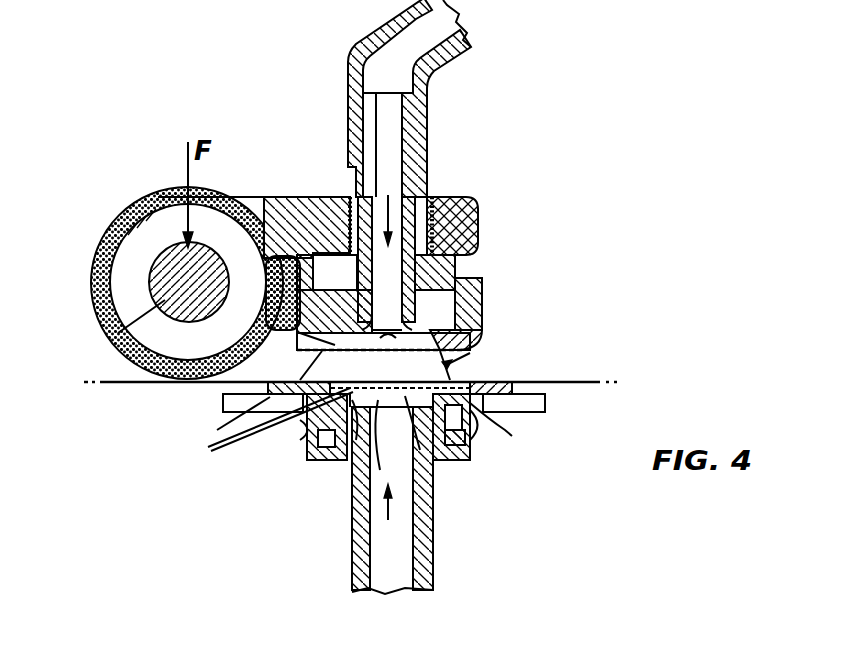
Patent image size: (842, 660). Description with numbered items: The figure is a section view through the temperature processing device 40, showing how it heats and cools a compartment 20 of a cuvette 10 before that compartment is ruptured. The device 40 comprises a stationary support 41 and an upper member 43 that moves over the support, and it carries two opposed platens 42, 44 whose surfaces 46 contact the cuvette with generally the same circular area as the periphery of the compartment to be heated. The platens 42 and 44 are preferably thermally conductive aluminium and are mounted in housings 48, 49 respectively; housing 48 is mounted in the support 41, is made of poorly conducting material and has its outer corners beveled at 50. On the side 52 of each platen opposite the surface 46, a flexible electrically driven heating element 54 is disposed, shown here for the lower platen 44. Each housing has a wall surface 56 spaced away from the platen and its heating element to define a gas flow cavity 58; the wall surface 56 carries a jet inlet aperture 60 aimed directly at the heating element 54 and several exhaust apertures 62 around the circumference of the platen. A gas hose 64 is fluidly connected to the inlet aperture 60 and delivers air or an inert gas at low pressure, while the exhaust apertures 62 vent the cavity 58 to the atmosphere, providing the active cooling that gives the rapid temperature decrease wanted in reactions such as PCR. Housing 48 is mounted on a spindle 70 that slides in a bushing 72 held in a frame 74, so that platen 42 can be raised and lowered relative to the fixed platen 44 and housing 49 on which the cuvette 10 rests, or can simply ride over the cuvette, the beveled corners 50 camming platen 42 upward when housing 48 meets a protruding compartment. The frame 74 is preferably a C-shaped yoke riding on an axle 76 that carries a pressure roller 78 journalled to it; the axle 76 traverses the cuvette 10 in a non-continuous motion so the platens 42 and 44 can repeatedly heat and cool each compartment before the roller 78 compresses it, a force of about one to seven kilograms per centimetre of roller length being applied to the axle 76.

The cuvette 10 is at (553, 386).
The compartment 20 is at (482, 358).
The device 40 is at (593, 240).
The stationary support 41 is at (588, 374).
The platen 42 is at (482, 302).
The upper member 43 is at (495, 190).
The platen 44 is at (310, 445).
The surface 46 is at (326, 348).
The housing 48 is at (482, 288).
The housing 49 is at (216, 431).
The beveled corners 50 is at (500, 350).
The side 52 is at (492, 468).
The heating element 54 is at (438, 465).
The wall surface 56 is at (445, 262).
The gas flow cavity 58 is at (323, 255).
The jet inlet aperture 60 is at (478, 213).
The exhaust aperture 62 is at (267, 316).
The gas hose 64 is at (447, 72).
The spindle 70 is at (420, 187).
The bushing 72 is at (427, 192).
The frame 74 is at (270, 203).
The axle 76 is at (122, 352).
The pressure roller 78 is at (96, 296).